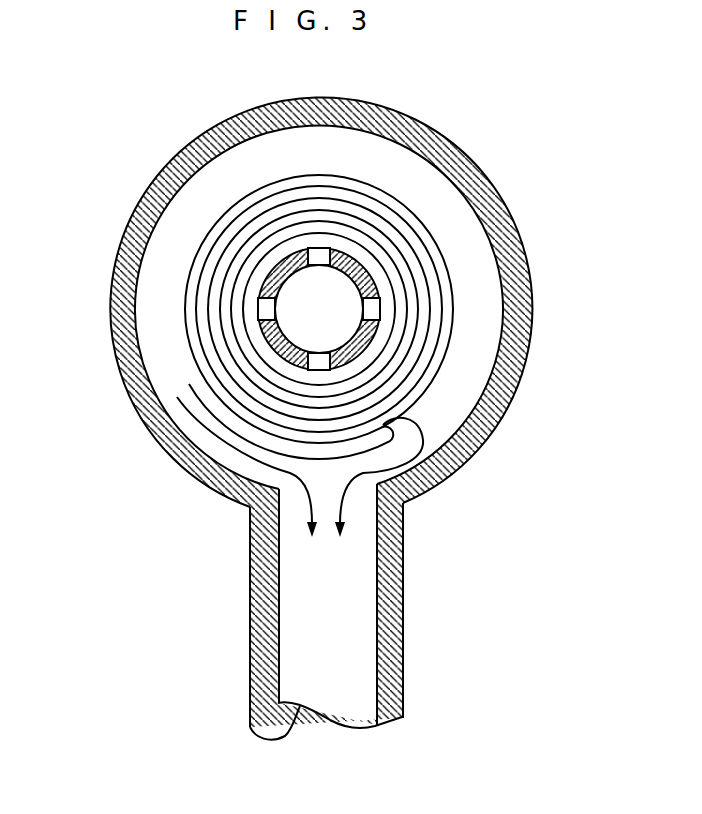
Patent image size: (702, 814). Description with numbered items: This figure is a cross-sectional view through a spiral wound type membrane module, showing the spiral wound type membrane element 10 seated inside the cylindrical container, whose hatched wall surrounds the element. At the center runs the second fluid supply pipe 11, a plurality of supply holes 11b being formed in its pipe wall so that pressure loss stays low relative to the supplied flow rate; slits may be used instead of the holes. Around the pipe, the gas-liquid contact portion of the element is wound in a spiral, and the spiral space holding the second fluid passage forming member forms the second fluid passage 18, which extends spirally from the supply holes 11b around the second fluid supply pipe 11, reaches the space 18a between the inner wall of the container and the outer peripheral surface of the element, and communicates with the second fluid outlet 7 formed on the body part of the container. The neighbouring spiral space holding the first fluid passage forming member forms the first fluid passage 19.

The spiral wound type membrane element 10 is at (254, 159).
The second fluid supply pipe 11 is at (356, 255).
The supply holes 11b is at (317, 250).
The first fluid passage 19 is at (233, 305).
The second fluid passage 18 is at (382, 280).
The space 18a is at (483, 335).
The second fluid outlet 7 is at (397, 610).